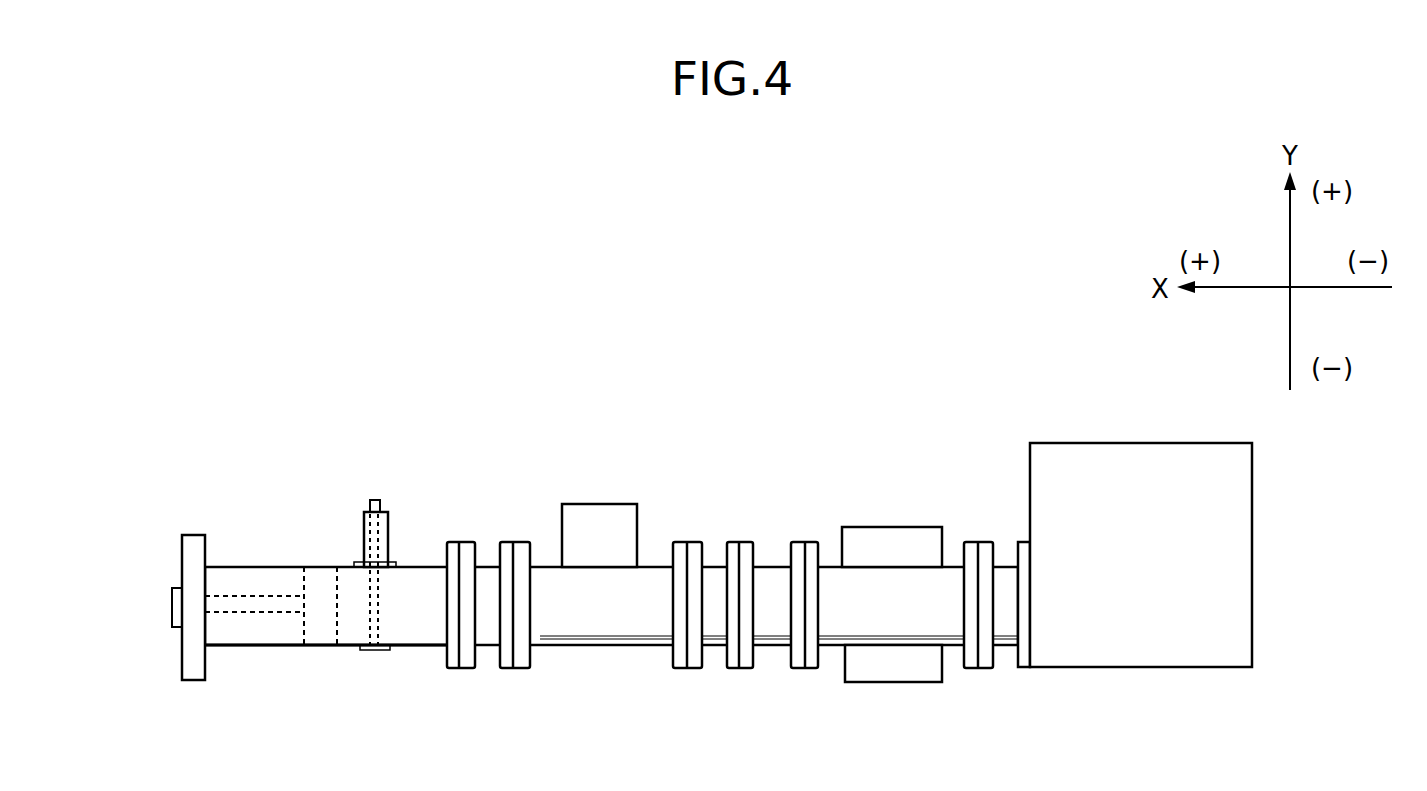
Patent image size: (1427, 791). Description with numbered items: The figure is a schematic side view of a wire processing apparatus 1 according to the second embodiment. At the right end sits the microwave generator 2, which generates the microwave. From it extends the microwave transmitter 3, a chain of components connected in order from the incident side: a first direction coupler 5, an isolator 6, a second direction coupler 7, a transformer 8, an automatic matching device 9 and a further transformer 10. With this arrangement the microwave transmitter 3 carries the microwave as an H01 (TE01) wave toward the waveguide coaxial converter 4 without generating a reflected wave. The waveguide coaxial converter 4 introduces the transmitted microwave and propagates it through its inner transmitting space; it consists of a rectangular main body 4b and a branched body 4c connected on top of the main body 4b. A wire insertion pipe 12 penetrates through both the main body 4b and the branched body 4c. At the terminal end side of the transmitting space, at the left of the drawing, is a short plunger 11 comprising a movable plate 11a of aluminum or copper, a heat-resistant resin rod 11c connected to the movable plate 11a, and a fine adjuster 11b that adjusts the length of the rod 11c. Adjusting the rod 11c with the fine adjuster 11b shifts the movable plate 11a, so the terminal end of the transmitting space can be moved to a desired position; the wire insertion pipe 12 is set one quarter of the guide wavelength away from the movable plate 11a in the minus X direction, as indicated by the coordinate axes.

The wire processing apparatus 1 is at (201, 434).
The microwave generator 2 is at (1143, 455).
The microwave transmitter 3 is at (617, 422).
The waveguide coaxial converter 4 is at (427, 550).
The main body 4b is at (430, 646).
The branched body 4c is at (363, 520).
The first direction coupler 5 is at (1007, 568).
The isolator 6 is at (905, 527).
The second direction coupler 7 is at (772, 572).
The transformer 8 is at (708, 572).
The automatic matching device 9 is at (653, 572).
The transformer 10 is at (487, 568).
The short plunger 11 is at (220, 577).
The movable plate 11a is at (323, 637).
The fine adjuster 11b is at (172, 603).
The rod 11c is at (270, 596).
The wire insertion pipe 12 is at (380, 627).